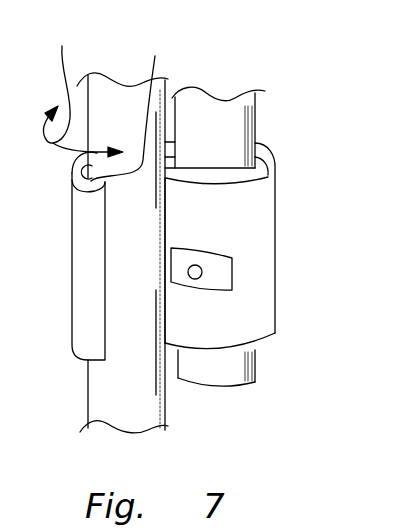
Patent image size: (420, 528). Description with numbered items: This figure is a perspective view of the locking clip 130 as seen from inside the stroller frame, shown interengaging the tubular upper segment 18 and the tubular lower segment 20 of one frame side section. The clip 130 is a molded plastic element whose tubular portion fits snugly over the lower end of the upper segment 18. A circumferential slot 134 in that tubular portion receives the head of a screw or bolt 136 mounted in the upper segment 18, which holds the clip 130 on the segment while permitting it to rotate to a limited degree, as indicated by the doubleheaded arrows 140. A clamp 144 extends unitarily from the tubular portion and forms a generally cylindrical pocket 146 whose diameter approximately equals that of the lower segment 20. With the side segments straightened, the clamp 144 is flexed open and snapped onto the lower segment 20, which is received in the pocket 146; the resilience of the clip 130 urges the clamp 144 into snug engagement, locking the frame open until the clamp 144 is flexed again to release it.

The tubular upper segment 18 is at (240, 123).
The tubular lower segment 20 is at (105, 392).
The clip 130 is at (275, 229).
The circumferential slot 134 is at (232, 280).
The screw or bolt 136 is at (198, 268).
The doubleheaded arrows 140 is at (81, 89).
The clamp 144 is at (82, 242).
The cylindrical recess or pocket 146 is at (135, 105).